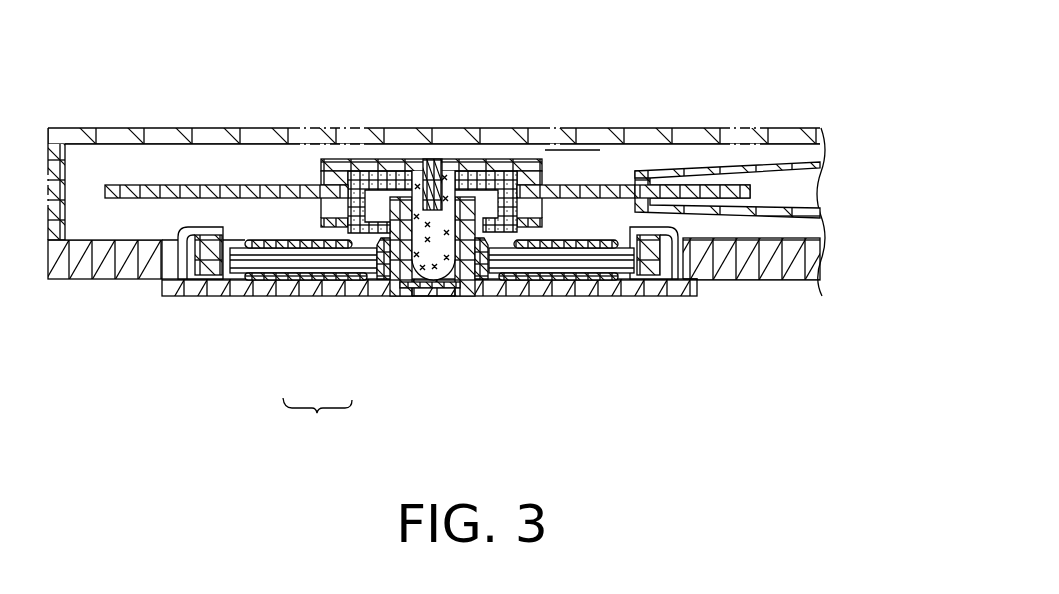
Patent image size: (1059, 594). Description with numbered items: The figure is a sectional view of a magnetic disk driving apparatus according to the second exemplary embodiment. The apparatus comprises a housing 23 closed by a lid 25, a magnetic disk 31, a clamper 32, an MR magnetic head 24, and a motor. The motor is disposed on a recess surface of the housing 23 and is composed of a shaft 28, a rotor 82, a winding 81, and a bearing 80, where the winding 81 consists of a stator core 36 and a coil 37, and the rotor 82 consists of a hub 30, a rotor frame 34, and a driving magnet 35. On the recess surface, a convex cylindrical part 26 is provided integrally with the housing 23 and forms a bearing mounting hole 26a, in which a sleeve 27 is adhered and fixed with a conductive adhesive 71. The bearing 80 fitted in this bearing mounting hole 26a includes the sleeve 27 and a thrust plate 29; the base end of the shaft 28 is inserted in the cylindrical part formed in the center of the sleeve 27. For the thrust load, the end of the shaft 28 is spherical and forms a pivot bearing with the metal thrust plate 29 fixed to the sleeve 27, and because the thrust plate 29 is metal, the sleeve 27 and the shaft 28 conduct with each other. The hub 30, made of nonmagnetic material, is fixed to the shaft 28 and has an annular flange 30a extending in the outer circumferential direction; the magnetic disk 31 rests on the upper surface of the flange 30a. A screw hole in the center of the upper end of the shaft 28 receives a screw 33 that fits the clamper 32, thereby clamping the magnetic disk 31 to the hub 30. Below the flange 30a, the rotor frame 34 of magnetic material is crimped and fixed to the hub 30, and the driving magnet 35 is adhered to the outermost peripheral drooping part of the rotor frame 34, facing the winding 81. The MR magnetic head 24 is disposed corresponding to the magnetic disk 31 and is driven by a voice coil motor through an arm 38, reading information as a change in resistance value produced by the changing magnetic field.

The housing 23 is at (112, 262).
The magnetic head 24 is at (641, 171).
The lid 25 is at (740, 128).
The cylindrical part 26 is at (385, 262).
The bearing mounting hole 26a is at (470, 294).
The sleeve 27 is at (403, 292).
The shaft 28 is at (432, 290).
The thrust plate 29 is at (444, 296).
The hub 30 is at (378, 159).
The flange 30a is at (563, 158).
The magnetic disk 31 is at (150, 186).
The clamper 32 is at (528, 165).
The screw 33 is at (435, 159).
The rotor frame 34 is at (187, 262).
The driving magnet 35 is at (209, 262).
The stator core 36 is at (302, 258).
The coil 37 is at (279, 282).
The arm 38 is at (783, 167).
The conductive adhesive 71 is at (484, 172).
The bearing 80 is at (535, 398).
The winding 81 is at (317, 422).
The rotor 82 is at (165, 387).